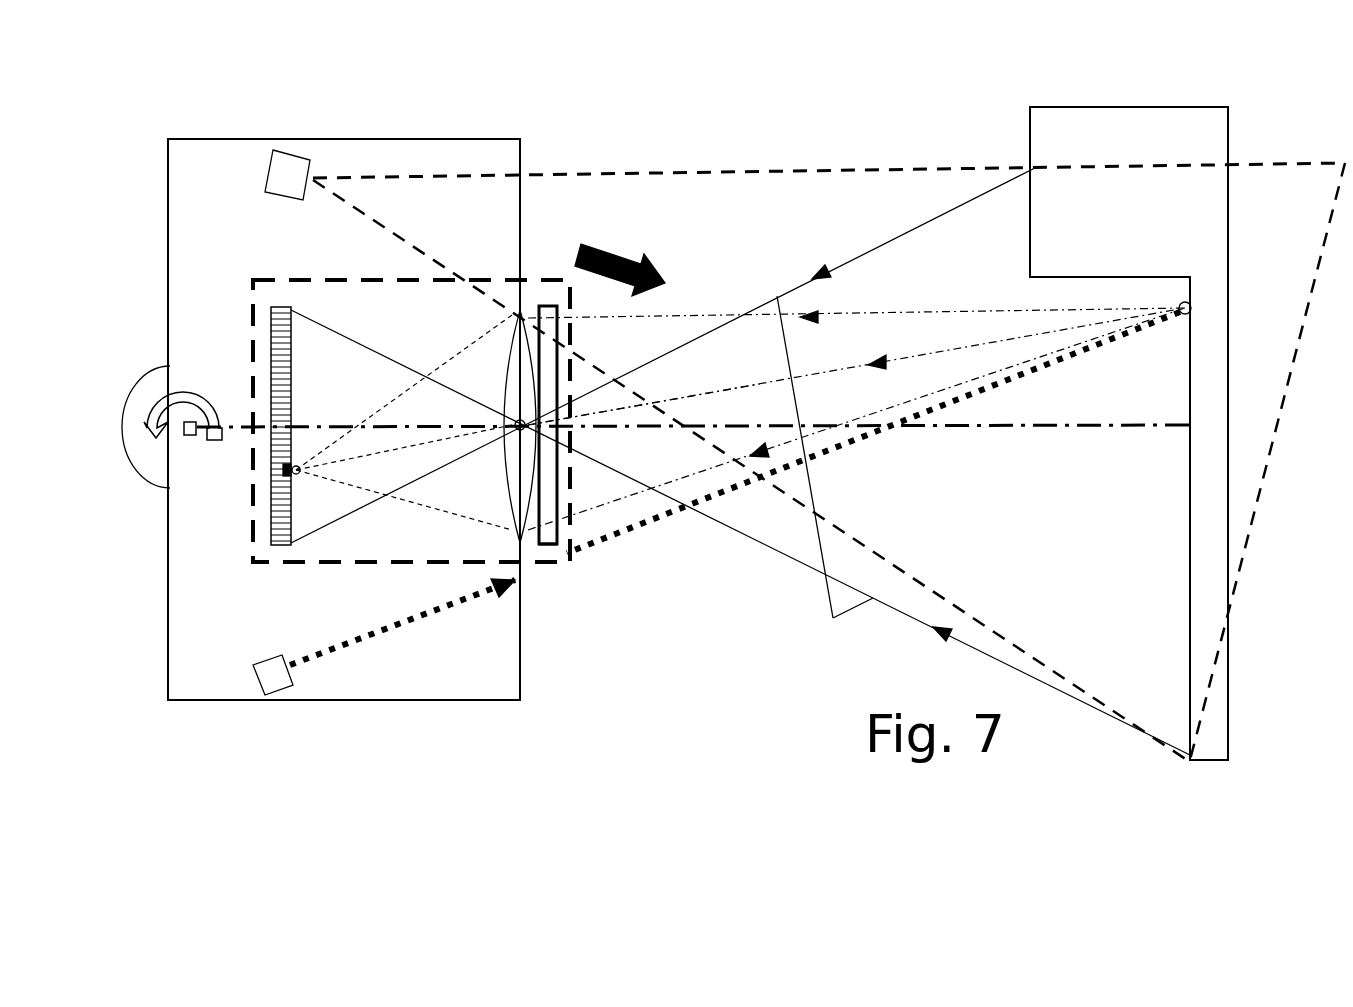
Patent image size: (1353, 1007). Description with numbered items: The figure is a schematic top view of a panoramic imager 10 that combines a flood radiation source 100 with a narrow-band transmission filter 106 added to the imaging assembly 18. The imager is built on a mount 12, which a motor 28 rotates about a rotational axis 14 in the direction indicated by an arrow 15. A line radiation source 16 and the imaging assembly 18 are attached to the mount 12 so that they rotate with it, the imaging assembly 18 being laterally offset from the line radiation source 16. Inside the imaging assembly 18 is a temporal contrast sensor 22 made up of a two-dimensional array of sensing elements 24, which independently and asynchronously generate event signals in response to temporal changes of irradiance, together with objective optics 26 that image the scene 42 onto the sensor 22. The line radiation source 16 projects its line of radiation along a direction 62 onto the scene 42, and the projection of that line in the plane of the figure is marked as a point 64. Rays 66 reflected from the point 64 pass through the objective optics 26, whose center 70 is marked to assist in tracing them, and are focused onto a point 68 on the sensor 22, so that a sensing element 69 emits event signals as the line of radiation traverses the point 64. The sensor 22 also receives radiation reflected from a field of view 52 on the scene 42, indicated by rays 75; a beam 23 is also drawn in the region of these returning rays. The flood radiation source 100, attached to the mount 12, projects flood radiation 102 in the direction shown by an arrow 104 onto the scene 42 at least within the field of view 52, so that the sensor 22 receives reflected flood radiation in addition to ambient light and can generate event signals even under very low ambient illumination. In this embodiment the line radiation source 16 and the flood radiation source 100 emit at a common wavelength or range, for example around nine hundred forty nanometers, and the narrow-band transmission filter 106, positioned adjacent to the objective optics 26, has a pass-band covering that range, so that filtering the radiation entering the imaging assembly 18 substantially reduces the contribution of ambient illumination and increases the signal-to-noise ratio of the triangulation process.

The panoramic imager 10 is at (155, 125).
The mount 12 is at (465, 652).
The rotational axis 14 is at (192, 437).
The arrow 15 is at (193, 390).
The line radiation source 16 is at (275, 686).
The imaging assembly 18 is at (548, 277).
The temporal contrast sensor 22 is at (278, 308).
The return beam 23 is at (660, 413).
The sensing elements 24 is at (292, 337).
The objective optics 26 is at (411, 407).
The motor 28 is at (147, 398).
The scene 42 is at (1150, 192).
The field of view 52 is at (1188, 453).
The direction 62 is at (580, 543).
The point 64 is at (1193, 304).
The rays 66 is at (997, 385).
The point 68 is at (273, 477).
The sensing element 69 is at (287, 473).
The center 70 is at (553, 445).
The rays 75 is at (740, 525).
The flood radiation source 100 is at (288, 167).
The flood radiation 102 is at (733, 280).
The arrow 104 is at (615, 250).
The narrow-band transmission filter 106 is at (547, 545).